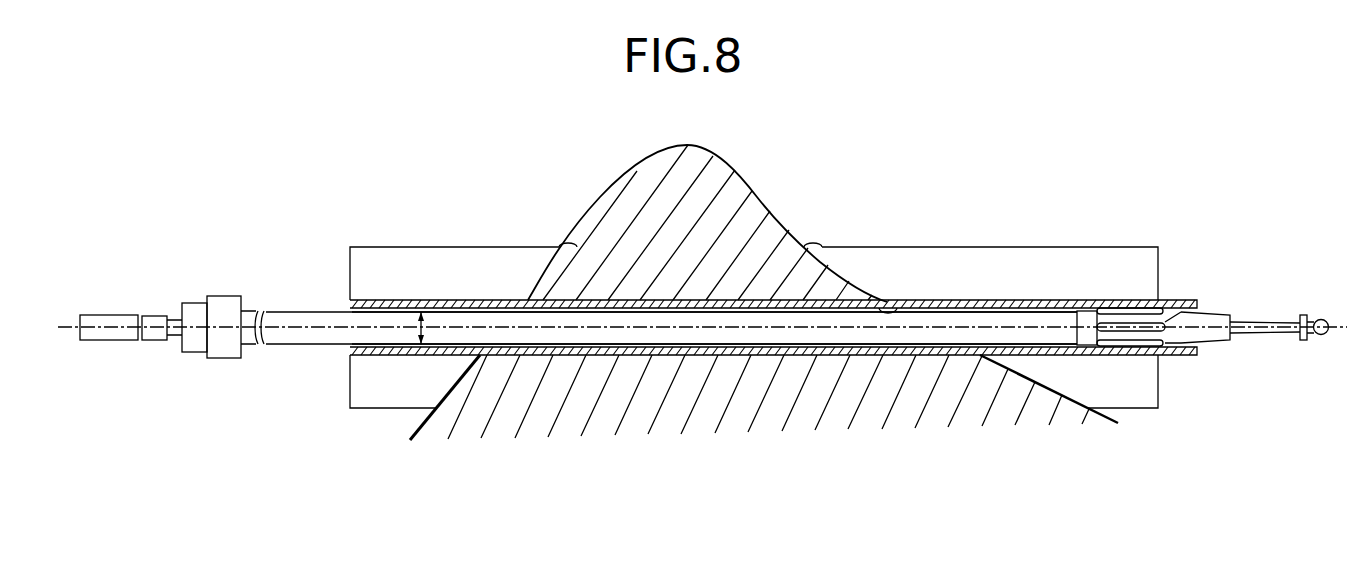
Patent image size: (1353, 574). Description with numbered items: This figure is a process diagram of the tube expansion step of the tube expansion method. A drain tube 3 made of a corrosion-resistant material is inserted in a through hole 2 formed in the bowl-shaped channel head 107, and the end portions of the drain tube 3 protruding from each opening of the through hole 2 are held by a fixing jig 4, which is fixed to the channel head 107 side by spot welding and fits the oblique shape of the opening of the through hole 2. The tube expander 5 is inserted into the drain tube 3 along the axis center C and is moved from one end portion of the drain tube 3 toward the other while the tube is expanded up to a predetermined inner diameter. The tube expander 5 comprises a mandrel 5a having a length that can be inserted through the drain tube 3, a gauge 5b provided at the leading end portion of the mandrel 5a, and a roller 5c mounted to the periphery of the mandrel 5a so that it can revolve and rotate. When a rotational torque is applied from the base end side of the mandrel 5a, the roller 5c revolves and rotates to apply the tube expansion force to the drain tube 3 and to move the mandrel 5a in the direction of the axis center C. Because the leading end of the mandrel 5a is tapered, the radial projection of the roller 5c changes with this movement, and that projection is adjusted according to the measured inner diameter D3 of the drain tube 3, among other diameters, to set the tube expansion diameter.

The through hole 2 is at (906, 308).
The drain tube 3 is at (964, 300).
The fixing jig 4 is at (452, 247).
The tube expander 5 is at (222, 288).
The mandrel 5a is at (286, 311).
The gauge 5b is at (1223, 312).
The roller 5c is at (1192, 300).
The channel head 107 is at (748, 203).
The axis center C is at (63, 325).
The inner diameter of the drain tube D3 is at (418, 333).